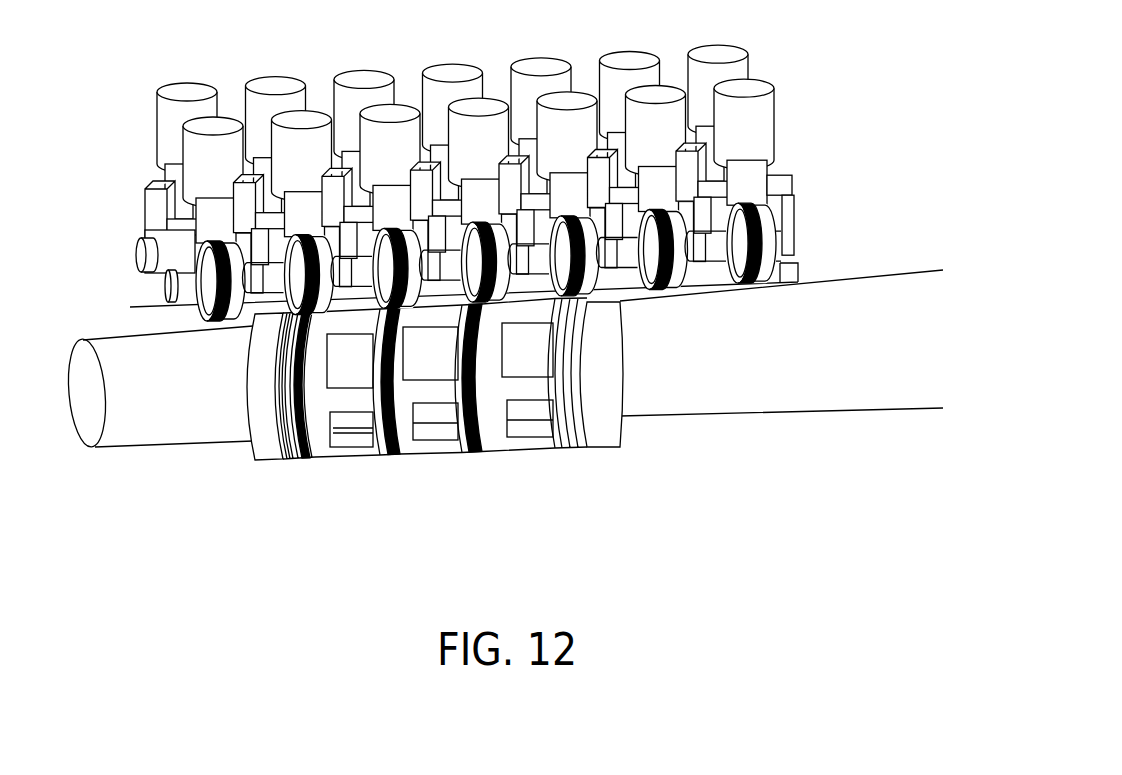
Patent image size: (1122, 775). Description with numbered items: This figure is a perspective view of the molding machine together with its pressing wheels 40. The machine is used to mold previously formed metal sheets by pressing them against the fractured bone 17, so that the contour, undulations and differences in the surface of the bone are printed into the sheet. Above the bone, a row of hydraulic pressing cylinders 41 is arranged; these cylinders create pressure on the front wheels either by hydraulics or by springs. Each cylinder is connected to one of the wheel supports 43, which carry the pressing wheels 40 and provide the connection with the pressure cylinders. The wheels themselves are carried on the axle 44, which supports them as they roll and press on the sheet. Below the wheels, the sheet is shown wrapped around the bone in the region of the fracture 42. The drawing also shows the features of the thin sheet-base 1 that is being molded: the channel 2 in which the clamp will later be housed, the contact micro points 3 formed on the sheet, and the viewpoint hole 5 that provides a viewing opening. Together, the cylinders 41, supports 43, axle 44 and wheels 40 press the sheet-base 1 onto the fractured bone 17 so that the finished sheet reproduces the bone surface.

The thin sheet-base 1 is at (278, 462).
The channel 2 is at (477, 450).
The contact micro points 3 is at (300, 458).
The viewpoint hole 5 is at (368, 447).
The fractured bone 17 is at (888, 268).
The pressing wheels 40 is at (190, 310).
The hydraulic pressing cylinders 41 is at (777, 120).
The fracture 42 is at (432, 454).
The wheel supports 43 is at (787, 202).
The axle 44 is at (137, 254).